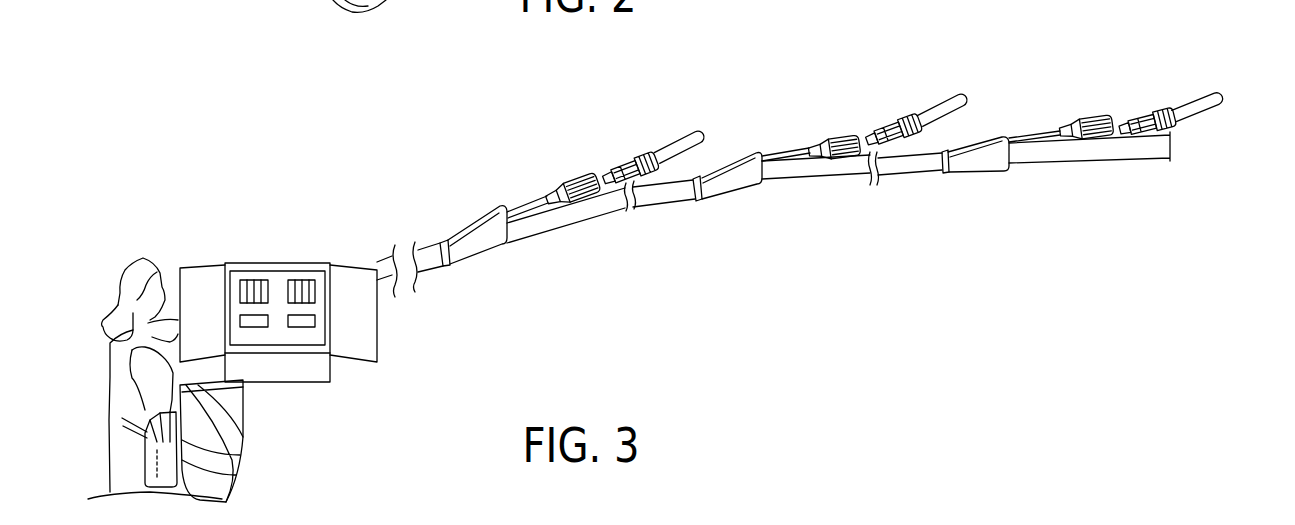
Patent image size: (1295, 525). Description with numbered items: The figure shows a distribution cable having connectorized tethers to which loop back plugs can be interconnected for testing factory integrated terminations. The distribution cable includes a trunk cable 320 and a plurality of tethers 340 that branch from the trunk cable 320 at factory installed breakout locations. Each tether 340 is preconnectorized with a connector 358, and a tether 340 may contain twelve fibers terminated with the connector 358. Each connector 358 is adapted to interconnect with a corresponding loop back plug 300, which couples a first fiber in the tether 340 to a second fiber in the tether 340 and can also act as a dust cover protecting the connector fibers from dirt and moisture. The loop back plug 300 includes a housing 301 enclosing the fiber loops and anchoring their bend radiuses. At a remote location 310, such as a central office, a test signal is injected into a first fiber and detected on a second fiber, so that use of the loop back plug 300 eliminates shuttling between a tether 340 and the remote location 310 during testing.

The loop back plug 300 is at (643, 150).
The housing 301 is at (692, 127).
The remote location 310 is at (277, 262).
The trunk cable 320 is at (535, 225).
The tether 340 is at (522, 205).
The connector 358 is at (577, 178).